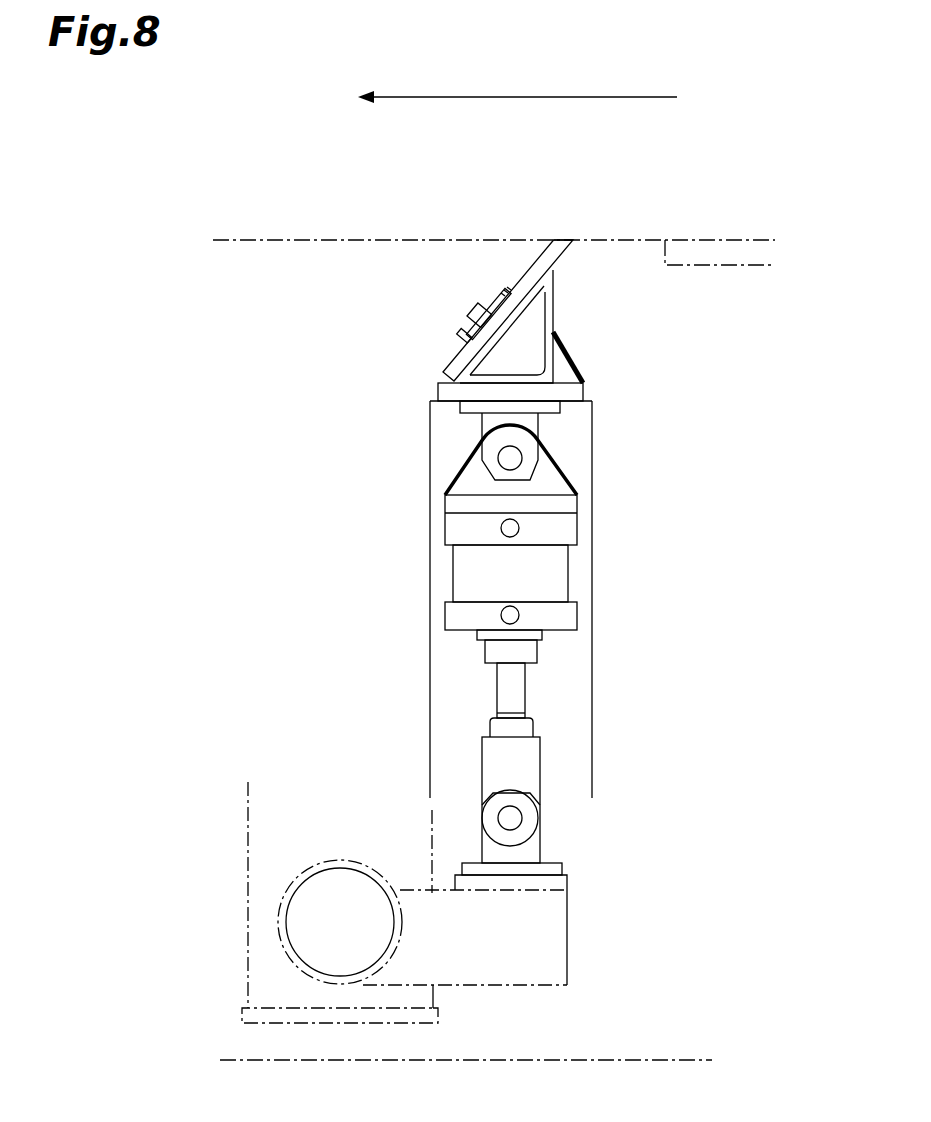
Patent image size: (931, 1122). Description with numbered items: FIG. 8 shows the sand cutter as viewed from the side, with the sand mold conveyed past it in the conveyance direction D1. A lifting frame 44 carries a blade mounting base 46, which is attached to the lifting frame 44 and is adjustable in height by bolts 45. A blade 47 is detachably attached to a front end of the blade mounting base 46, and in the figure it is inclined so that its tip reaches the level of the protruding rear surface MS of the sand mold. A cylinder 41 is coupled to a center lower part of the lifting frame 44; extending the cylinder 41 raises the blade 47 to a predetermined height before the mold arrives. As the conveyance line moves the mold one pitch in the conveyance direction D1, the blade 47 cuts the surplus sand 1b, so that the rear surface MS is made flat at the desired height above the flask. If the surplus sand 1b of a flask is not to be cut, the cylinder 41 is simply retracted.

The cylinder 41 is at (453, 575).
The lifting frame 44 is at (564, 332).
The bolts 45 is at (458, 340).
The blade mounting base 46 is at (527, 270).
The blade 47 is at (573, 240).
The surplus sand 1b is at (720, 253).
The rear surface of the sand mold MS is at (443, 240).
The conveyance direction D1 is at (517, 84).